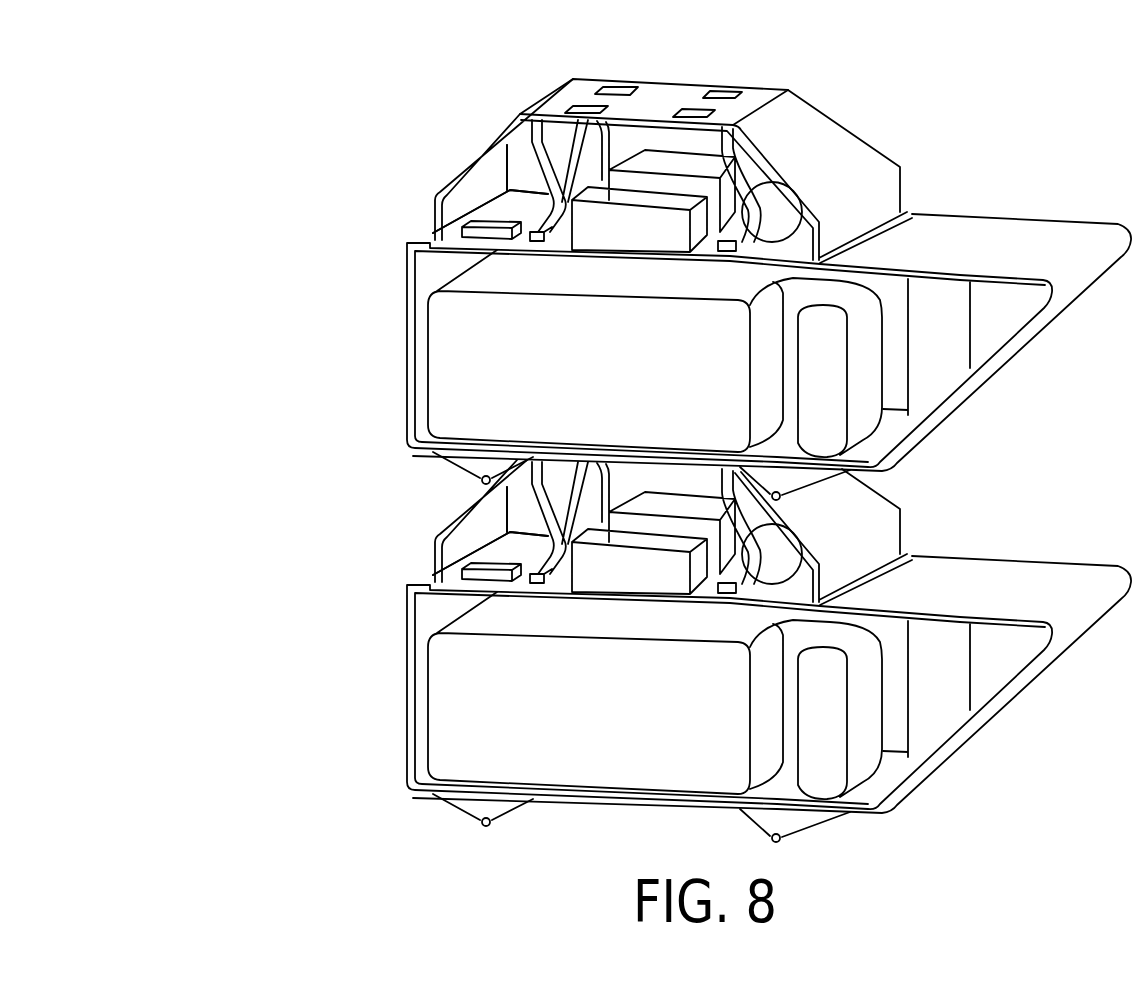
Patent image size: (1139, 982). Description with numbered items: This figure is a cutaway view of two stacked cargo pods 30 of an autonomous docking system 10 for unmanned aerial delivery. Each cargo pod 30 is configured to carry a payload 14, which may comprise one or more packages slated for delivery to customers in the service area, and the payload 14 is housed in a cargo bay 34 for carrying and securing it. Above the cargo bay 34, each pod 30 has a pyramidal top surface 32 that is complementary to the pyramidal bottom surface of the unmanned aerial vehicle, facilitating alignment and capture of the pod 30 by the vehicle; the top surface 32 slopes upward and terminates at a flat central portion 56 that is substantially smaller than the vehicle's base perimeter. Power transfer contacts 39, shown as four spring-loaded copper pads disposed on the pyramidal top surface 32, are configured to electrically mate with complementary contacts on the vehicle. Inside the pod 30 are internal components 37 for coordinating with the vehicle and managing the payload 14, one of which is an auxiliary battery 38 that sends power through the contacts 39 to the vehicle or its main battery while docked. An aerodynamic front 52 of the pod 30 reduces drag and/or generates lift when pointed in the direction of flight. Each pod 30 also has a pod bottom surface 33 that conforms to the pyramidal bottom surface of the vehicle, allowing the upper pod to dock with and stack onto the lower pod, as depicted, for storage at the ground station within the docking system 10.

The autonomous docking system 10 is at (250, 140).
The cargo pod 30 is at (335, 281).
The payload 14 is at (450, 329).
The pyramidal top surface 32 is at (828, 138).
The pod bottom surface 33 is at (605, 828).
The cargo bay 34 is at (465, 386).
The internal components 37 is at (500, 208).
The auxiliary battery 38 is at (491, 401).
The power transfer contacts 39 is at (715, 92).
The aerodynamic front 52 is at (1055, 312).
The flat central portion 56 is at (753, 90).